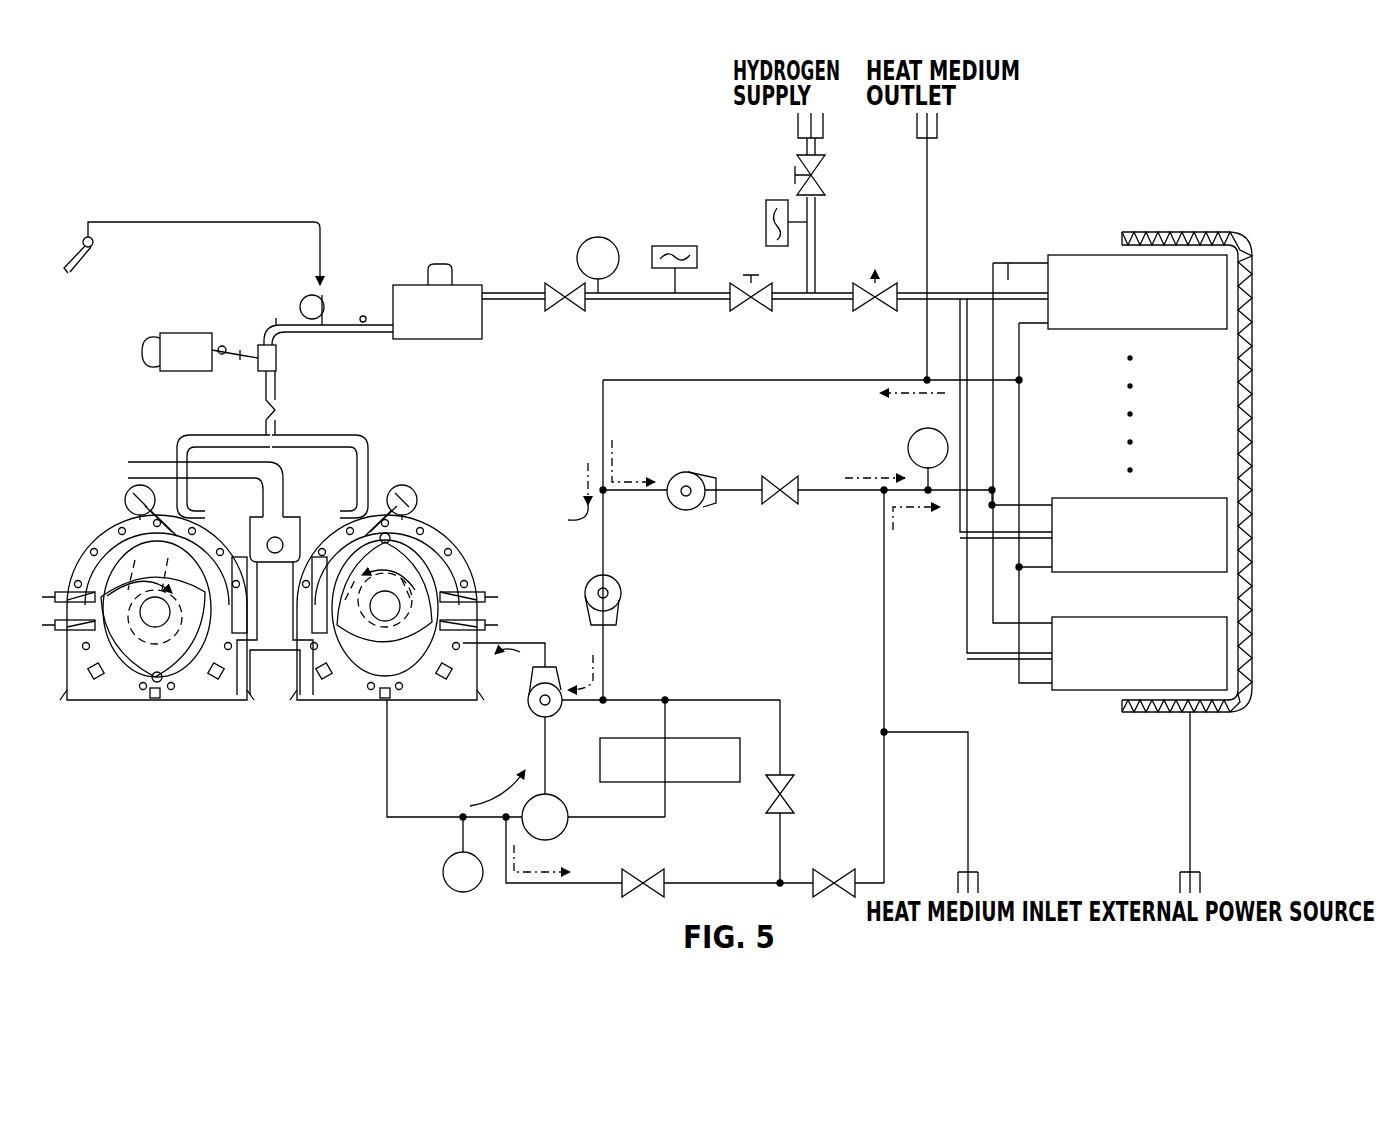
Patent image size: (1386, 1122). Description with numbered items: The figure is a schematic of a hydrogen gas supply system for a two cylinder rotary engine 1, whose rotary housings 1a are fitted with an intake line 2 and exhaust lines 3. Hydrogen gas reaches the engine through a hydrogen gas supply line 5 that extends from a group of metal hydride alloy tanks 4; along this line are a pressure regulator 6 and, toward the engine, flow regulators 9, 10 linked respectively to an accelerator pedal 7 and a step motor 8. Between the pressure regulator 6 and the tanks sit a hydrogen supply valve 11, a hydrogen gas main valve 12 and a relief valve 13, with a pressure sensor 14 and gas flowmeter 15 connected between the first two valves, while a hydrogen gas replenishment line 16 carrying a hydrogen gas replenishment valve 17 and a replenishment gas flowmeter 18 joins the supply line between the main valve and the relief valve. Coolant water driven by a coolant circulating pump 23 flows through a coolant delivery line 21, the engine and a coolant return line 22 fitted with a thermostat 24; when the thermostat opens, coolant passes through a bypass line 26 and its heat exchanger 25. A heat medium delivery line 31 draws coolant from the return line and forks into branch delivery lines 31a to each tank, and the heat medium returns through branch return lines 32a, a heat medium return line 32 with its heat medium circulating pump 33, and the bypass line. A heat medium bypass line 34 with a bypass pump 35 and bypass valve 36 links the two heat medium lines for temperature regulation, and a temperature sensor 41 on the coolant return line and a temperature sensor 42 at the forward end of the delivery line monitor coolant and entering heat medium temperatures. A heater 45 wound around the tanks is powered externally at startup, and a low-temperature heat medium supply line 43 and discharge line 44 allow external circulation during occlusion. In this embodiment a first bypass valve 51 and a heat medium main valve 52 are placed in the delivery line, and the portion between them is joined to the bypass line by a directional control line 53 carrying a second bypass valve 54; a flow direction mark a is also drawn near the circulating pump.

The rotary engine 1 is at (105, 522).
The rotary housing 1a is at (470, 572).
The intake line 2 is at (150, 465).
The exhaust line 3 is at (262, 595).
The metal hydride alloy tank 4 is at (1072, 255).
The hydrogen gas supply line 5 is at (515, 290).
The pressure regulator 6 is at (455, 335).
The accelerator pedal 7 is at (92, 254).
The step motor 8 is at (203, 338).
The flow regulator 9 is at (330, 340).
The flow regulator 10 is at (276, 383).
The hydrogen supply valve 11 is at (568, 310).
The hydrogen gas main valve 12 is at (748, 310).
The relief valve 13 is at (870, 312).
The pressure sensor 14 is at (590, 240).
The gas flowmeter 15 is at (675, 245).
The hydrogen gas replenishment line 16 is at (817, 232).
The hydrogen gas replenishment valve 17 is at (825, 170).
The replenishment gas flowmeter 18 is at (766, 205).
The coolant delivery line 21 is at (520, 643).
The coolant return line 22 is at (392, 770).
The coolant circulating pump 23 is at (528, 715).
The thermostat 24 is at (568, 830).
The heat exchanger 25 is at (690, 783).
The bypass line 26 is at (665, 718).
The heat medium delivery line 31 is at (730, 880).
The branch delivery line 31a is at (1008, 252).
The heat medium return line 32 is at (582, 505).
The branch return line 32a is at (1035, 338).
The heat medium circulating pump 33 is at (622, 598).
The heat medium bypass line 34 is at (830, 490).
The bypass pump 35 is at (685, 512).
The bypass valve 36 is at (775, 506).
The temperature sensor 41 is at (445, 870).
The temperature sensor 42 is at (912, 435).
The low-temperature heat medium supply line 43 is at (968, 810).
The low-temperature heat medium discharge line 44 is at (935, 195).
The heater 45 is at (1150, 712).
The first bypass valve 51 is at (648, 868).
The heat medium main valve 52 is at (835, 868).
The directional control line 53 is at (745, 700).
The second bypass valve 54 is at (790, 785).
The flow direction a is at (605, 698).